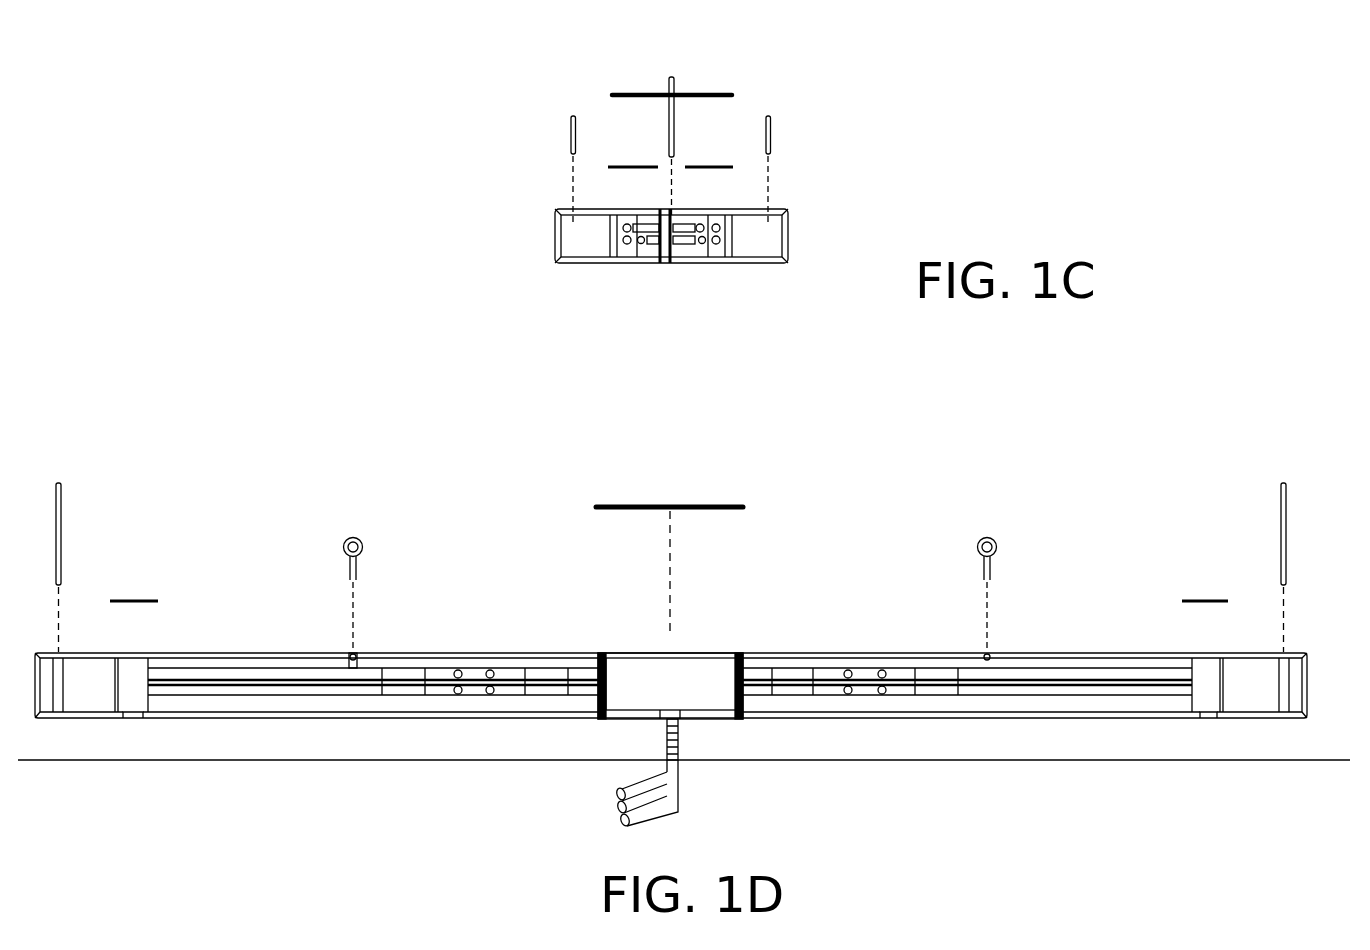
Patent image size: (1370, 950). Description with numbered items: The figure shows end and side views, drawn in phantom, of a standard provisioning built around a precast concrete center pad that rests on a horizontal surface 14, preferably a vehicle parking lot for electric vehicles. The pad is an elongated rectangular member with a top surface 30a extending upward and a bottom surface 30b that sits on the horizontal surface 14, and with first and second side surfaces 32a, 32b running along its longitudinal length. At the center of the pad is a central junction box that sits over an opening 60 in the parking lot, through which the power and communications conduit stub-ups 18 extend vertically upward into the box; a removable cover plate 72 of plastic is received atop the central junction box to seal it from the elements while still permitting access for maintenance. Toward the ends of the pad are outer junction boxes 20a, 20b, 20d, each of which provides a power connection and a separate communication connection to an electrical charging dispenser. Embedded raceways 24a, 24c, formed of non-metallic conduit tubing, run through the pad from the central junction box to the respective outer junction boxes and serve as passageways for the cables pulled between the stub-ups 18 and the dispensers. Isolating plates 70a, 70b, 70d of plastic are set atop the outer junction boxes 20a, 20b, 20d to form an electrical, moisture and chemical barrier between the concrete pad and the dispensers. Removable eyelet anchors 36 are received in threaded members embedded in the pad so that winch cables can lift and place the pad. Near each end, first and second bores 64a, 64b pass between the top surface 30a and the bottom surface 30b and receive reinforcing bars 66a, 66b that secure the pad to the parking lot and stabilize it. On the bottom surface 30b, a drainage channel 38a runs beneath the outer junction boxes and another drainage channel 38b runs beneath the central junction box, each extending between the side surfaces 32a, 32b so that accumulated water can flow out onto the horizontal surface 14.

In FIG. 1D, the horizontal surface 14 is at (358, 764).
In FIG. 1D, the stub-ups 18 is at (692, 748).
In FIG. 1C, the outer junction box 20a is at (627, 247).
In FIG. 1D, the outer junction box 20a is at (140, 668).
In FIG. 1C, the outer junction box 20b is at (716, 250).
In FIG. 1D, the outer junction box 20d is at (1204, 664).
In FIG. 1D, the raceway 24a is at (498, 646).
In FIG. 1D, the raceway 24c is at (790, 664).
In FIG. 1C, the top surface 30a is at (598, 209).
In FIG. 1D, the top surface 30a is at (288, 648).
In FIG. 1C, the bottom surface 30b is at (768, 268).
In FIG. 1D, the bottom surface 30b is at (450, 726).
In FIG. 1C, the first side surface 32a is at (793, 236).
In FIG. 1C, the second side surface 32b is at (552, 232).
In FIG. 1C, the eyelet anchor 36 is at (565, 125).
In FIG. 1D, the eyelet anchor 36 is at (368, 527).
In FIG. 1D, the drainage channel 38a is at (133, 723).
In FIG. 1D, the drainage channel 38b is at (678, 702).
In FIG. 1D, the opening 60 is at (650, 672).
In FIG. 1C, the first bore 64a is at (666, 265).
In FIG. 1D, the first bore 64a is at (57, 726).
In FIG. 1D, the second bore 64b is at (1286, 720).
In FIG. 1C, the reinforcing bar 66a is at (664, 74).
In FIG. 1D, the reinforcing bar 66a is at (70, 519).
In FIG. 1D, the reinforcing bar 66b is at (1274, 503).
In FIG. 1C, the isolating plate 70a is at (636, 161).
In FIG. 1D, the isolating plate 70a is at (140, 592).
In FIG. 1C, the isolating plate 70b is at (706, 158).
In FIG. 1D, the isolating plate 70d is at (1198, 593).
In FIG. 1C, the cover plate 72 is at (700, 91).
In FIG. 1D, the cover plate 72 is at (716, 513).